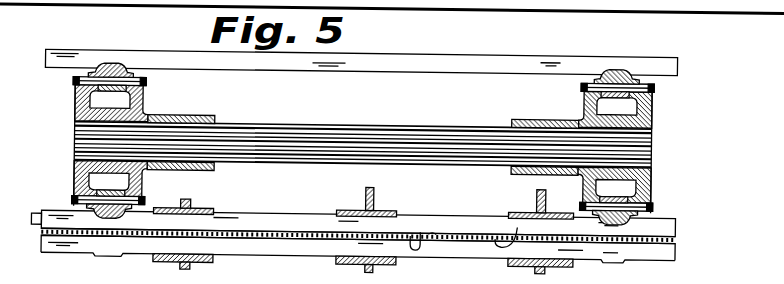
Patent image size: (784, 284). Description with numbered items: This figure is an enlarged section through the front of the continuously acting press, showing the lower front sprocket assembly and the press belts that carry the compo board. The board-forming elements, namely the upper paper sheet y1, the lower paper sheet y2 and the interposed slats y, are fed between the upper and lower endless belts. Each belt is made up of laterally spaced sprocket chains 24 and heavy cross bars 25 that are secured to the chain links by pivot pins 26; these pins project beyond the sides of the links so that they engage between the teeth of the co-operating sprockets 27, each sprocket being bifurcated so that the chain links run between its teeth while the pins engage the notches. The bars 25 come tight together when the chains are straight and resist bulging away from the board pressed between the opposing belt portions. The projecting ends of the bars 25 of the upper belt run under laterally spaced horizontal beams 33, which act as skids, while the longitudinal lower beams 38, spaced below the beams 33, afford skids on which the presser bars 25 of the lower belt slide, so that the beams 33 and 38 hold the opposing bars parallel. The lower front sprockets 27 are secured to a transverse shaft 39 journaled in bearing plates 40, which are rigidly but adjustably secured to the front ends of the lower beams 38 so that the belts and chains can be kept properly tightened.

The sprocket chains 24 is at (128, 72).
The cross bars 25 is at (423, 63).
The pivot pins 26 is at (147, 82).
The sprockets 27 is at (78, 106).
The horizontal beams 33 is at (188, 205).
The lower beams 38 is at (225, 251).
The transverse shaft 39 is at (247, 146).
The bearing plates 40 is at (200, 116).
The slats y is at (519, 222).
The upper paper sheet y1 is at (436, 228).
The lower paper sheet y2 is at (422, 228).